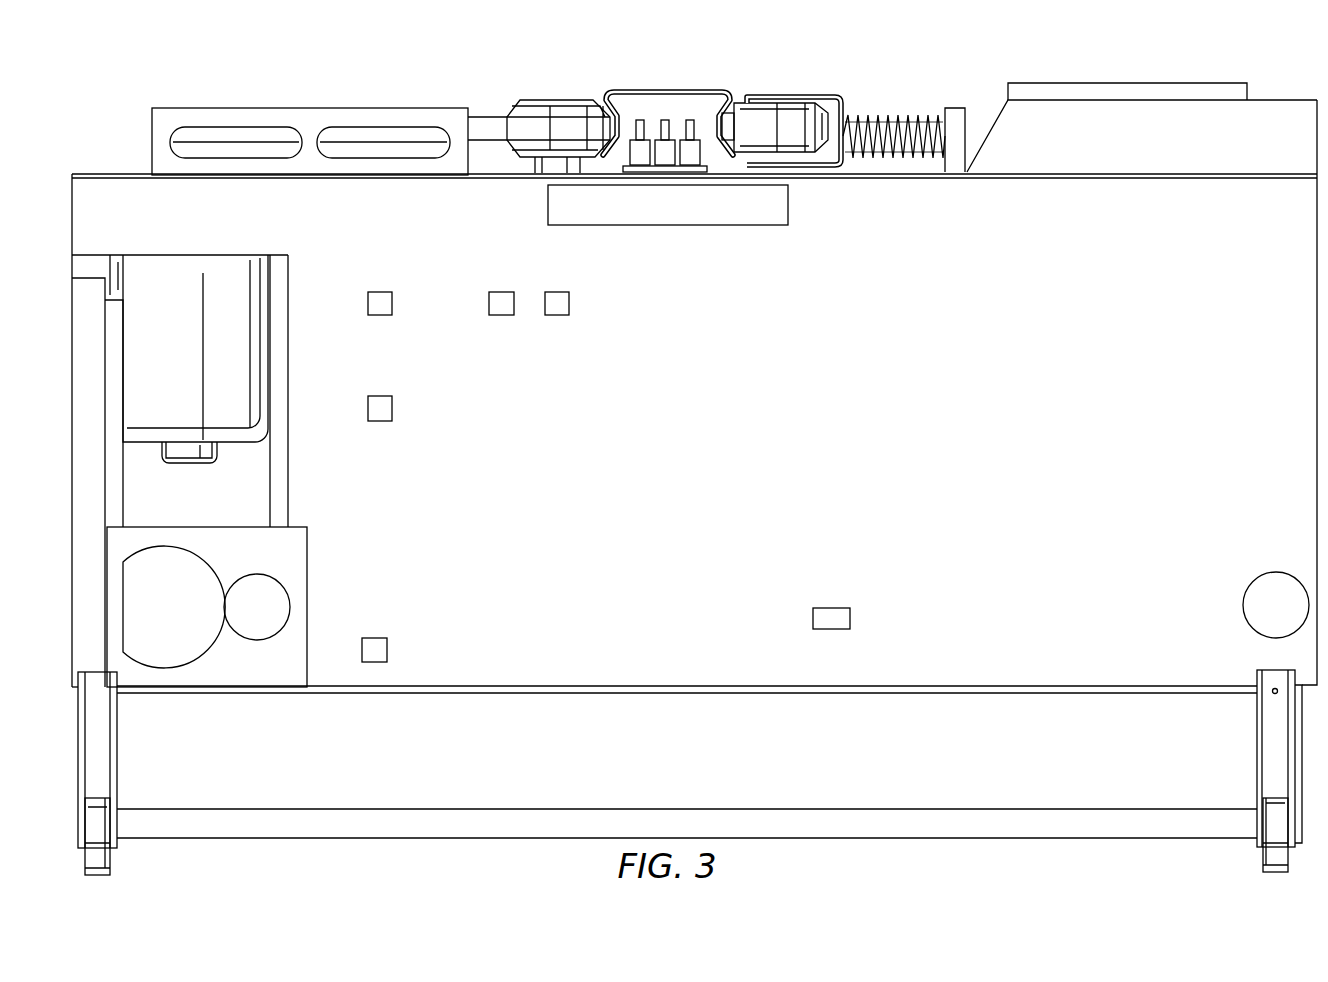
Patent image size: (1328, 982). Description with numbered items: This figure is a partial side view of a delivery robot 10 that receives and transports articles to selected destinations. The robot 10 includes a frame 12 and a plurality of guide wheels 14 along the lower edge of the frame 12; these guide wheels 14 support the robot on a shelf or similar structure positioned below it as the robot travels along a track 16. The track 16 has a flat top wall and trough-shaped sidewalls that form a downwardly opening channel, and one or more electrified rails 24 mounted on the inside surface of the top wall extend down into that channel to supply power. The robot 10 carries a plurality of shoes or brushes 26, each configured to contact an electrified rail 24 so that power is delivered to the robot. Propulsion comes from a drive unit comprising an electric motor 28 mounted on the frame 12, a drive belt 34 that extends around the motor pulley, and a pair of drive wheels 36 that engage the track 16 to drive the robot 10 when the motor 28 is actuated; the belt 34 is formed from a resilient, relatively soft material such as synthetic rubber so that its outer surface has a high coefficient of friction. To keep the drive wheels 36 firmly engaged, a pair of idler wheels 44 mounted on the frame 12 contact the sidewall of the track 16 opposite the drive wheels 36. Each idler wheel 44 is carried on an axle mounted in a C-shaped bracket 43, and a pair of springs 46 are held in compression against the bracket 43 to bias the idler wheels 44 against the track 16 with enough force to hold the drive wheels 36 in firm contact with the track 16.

The delivery robot 10 is at (166, 78).
The frame 12 is at (1277, 100).
The guide wheels 14 is at (110, 858).
The track 16 is at (616, 84).
The electrified rail 24 is at (645, 140).
The shoes or brushes 26 is at (695, 140).
The electric motor 28 is at (188, 270).
The drive belt 34 is at (486, 115).
The drive wheels 36 is at (557, 102).
The C-shaped bracket 43 is at (825, 93).
The idler wheels 44 is at (740, 102).
The springs 46 is at (897, 116).